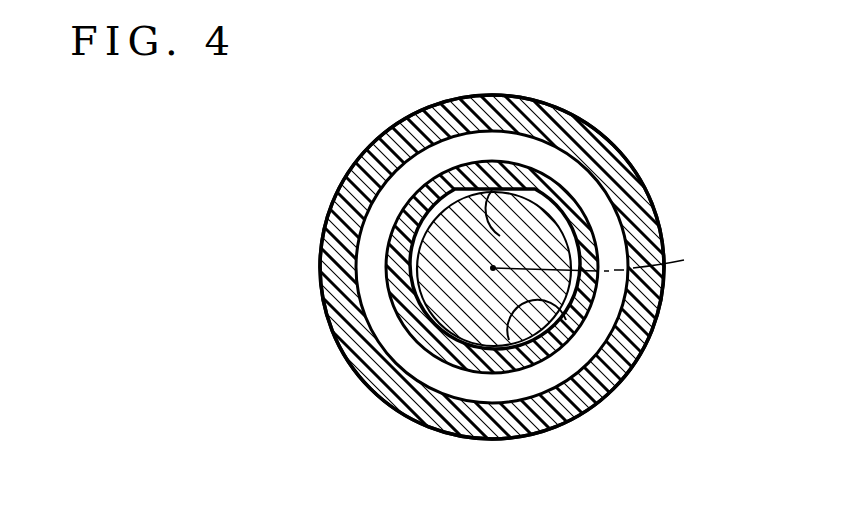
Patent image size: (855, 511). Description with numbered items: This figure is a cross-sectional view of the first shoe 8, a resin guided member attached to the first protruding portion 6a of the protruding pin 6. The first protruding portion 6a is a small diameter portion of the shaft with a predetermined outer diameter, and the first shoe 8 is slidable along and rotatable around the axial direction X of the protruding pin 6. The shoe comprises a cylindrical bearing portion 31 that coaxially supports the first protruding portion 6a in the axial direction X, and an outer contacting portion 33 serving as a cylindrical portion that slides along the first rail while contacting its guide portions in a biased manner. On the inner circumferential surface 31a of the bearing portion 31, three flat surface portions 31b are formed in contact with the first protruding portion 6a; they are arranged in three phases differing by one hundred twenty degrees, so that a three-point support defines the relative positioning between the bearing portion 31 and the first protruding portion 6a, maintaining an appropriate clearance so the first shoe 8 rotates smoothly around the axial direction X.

The first shoe 8 is at (628, 156).
The contacting portion 33 is at (382, 143).
The bearing portion 31 is at (580, 219).
The protruding pin 6 is at (489, 270).
The first protruding portion 6a is at (432, 240).
The inner circumferential surface 31a is at (533, 303).
The flat surface portions 31b is at (418, 300).
The axial direction X is at (599, 259).